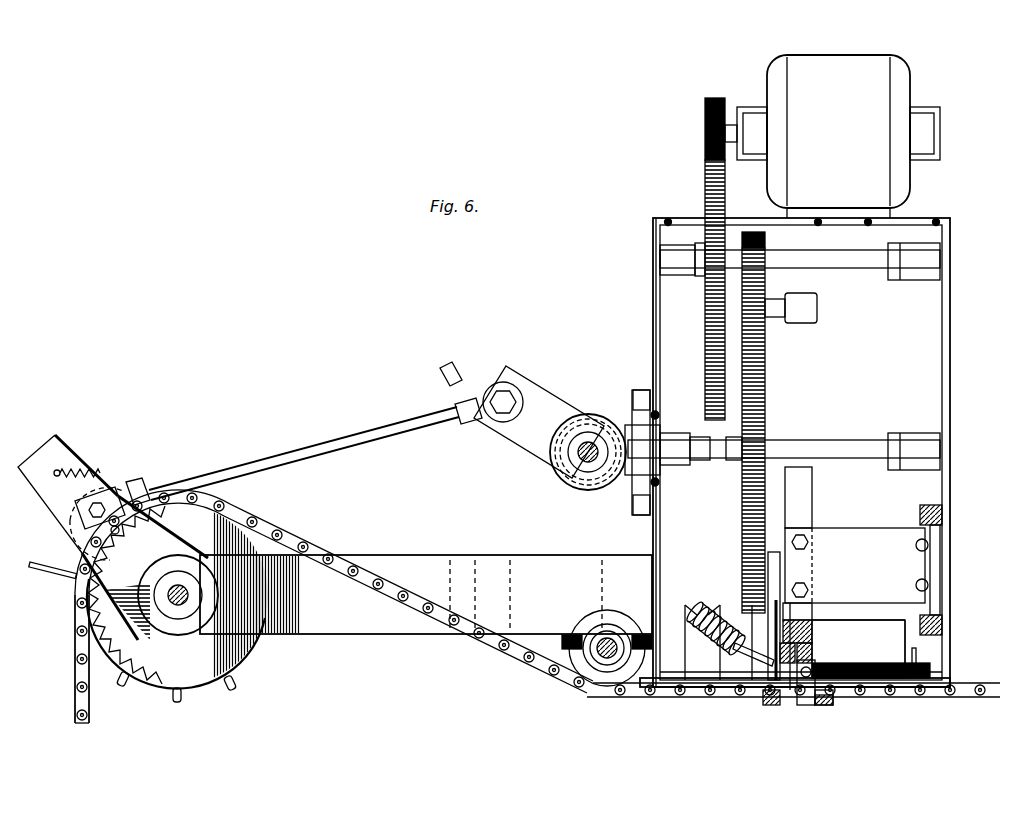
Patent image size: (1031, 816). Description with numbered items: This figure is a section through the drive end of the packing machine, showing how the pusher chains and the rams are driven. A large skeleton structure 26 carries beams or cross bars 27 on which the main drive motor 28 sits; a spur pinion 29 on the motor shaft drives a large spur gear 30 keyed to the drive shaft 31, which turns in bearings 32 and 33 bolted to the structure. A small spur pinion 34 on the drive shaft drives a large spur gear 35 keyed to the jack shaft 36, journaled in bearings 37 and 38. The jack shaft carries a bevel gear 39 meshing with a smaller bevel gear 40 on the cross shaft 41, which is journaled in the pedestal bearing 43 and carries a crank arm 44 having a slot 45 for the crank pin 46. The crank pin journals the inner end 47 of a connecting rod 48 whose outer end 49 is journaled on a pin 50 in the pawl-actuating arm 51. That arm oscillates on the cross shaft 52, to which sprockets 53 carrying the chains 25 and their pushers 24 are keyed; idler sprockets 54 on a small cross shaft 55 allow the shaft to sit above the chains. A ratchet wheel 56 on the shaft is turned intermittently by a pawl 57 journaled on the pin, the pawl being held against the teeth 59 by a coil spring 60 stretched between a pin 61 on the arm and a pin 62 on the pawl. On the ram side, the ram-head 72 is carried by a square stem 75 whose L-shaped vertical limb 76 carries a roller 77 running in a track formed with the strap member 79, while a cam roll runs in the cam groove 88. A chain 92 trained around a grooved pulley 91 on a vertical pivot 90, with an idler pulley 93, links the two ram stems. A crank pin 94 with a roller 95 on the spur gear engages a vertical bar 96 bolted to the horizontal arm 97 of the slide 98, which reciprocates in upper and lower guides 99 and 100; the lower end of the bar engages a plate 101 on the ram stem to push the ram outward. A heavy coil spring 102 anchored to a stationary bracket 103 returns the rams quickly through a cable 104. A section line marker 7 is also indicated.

The bracket 7 is at (772, 556).
The fingers or pushers 24 is at (918, 656).
The chains 25 is at (322, 552).
The skeleton structure 26 is at (948, 345).
The beams or cross bars 27 is at (655, 222).
The main drive motor 28 is at (860, 58).
The spur pinion 29 is at (703, 131).
The spur gear 30 is at (704, 193).
The drive shaft 31 is at (864, 264).
The bearing 32 is at (672, 253).
The bearing 33 is at (915, 280).
The spur pinion 34 is at (766, 246).
The spur gear 35 is at (766, 393).
The jack shaft 36 is at (840, 440).
The bearing 37 is at (690, 468).
The bearing 38 is at (915, 435).
The bevel gear 39 is at (632, 420).
The bevel gear 40 is at (570, 482).
The cross shaft 41 is at (588, 440).
The pedestal bearing 43 is at (642, 390).
The crank arm 44 is at (548, 392).
The slot 45 is at (470, 382).
The crank pin 46 is at (507, 390).
The inner end of connecting rod 47 is at (468, 424).
The connecting rod 48 is at (322, 445).
The outer end of connecting rod 49 is at (142, 484).
The pin 50 is at (102, 500).
The pawl-actuating arm 51 is at (55, 436).
The cross shaft 52 is at (193, 612).
The sprockets 53 is at (256, 652).
The idler sprockets 54 is at (585, 652).
The cross shaft 55 is at (610, 638).
The ratchet wheel 56 is at (245, 672).
The pawl 57 is at (74, 600).
The teeth 59 is at (126, 688).
The coil spring 60 is at (72, 470).
The pin 61 is at (38, 484).
The pin 62 is at (112, 486).
The ram-head 72 is at (907, 640).
The stem 75 is at (835, 610).
The vertical limb 76 is at (810, 706).
The roller 77 is at (824, 700).
The strap member 79 is at (770, 705).
The cam groove 88 is at (790, 590).
The vertical pivot 90 is at (871, 660).
The grooved pulley 91 is at (902, 655).
The chain 92 is at (792, 692).
The idler pulley 93 is at (858, 631).
The crank pin 94 is at (778, 318).
The roller 95 is at (818, 310).
The vertical bar 96 is at (806, 492).
The horizontal arm 97 is at (855, 565).
The slide 98 is at (942, 556).
The upper guide 99 is at (940, 515).
The lower guide 100 is at (942, 622).
The plate 101 is at (812, 623).
The coil spring 102 is at (706, 660).
The bracket 103 is at (670, 688).
The cable 104 is at (752, 662).